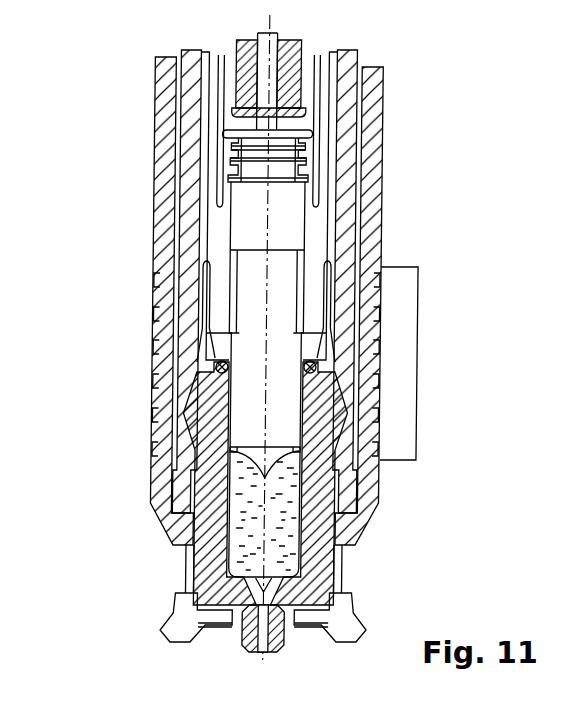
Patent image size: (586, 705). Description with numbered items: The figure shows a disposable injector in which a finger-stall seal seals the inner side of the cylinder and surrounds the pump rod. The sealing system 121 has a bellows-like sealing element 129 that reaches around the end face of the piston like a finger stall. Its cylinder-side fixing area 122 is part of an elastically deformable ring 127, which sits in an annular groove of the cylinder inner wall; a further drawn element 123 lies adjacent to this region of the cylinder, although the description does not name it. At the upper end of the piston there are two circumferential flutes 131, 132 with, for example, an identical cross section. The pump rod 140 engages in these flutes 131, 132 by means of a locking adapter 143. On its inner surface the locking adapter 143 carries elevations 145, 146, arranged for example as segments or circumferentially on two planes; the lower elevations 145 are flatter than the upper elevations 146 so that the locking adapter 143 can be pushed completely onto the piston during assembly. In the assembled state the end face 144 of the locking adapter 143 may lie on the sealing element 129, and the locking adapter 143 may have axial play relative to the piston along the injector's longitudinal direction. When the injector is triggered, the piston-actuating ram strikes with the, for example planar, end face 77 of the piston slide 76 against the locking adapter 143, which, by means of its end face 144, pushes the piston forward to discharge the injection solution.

The piston slide 76 is at (247, 66).
The end face of the piston slide 77 is at (348, 127).
The pump rod 140 is at (315, 58).
The locking adapter 143 is at (240, 132).
The circumferential flute 131 is at (232, 143).
The circumferential flute 132 is at (222, 173).
The lower elevation 145 is at (305, 153).
The guide tube 123 is at (327, 163).
The upper elevation 146 is at (320, 180).
The sealing element 129 is at (220, 271).
The elastically deformable ring 127 is at (218, 366).
The end face of the locking adapter 144 is at (285, 212).
The sealing system 121 is at (310, 292).
The cylinder-side fixing area 122 is at (315, 367).